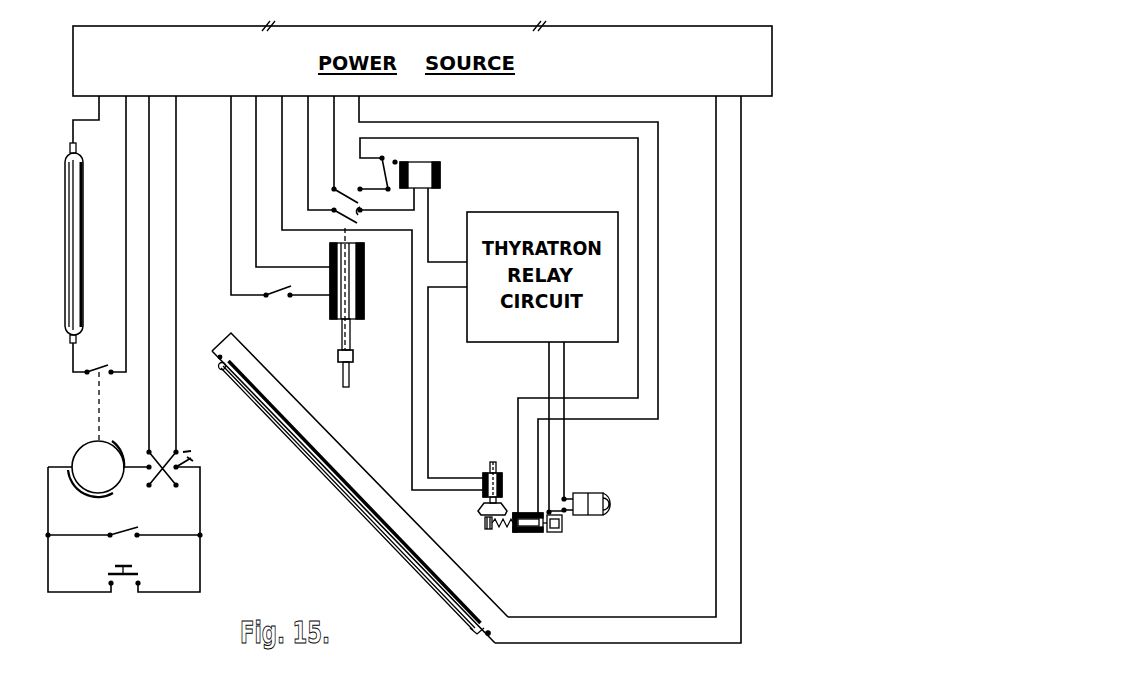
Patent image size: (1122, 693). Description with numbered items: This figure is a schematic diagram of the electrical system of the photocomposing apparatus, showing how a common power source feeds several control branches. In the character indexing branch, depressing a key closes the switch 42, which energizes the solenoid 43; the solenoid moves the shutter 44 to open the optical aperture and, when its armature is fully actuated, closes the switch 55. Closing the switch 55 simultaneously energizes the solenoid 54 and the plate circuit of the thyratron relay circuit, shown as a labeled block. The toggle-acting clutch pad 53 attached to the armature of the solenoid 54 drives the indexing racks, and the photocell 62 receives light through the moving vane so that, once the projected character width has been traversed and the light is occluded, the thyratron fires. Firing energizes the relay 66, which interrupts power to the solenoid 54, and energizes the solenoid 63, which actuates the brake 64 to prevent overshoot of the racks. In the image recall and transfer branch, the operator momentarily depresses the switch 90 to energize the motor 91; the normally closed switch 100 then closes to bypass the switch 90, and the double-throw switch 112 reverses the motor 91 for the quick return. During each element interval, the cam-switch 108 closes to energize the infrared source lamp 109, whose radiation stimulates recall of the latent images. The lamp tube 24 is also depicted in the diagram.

The infrared source lamp 109 is at (84, 230).
The cam-switch 108 is at (97, 369).
The motor 91 is at (113, 493).
The reversing switch 112 is at (191, 458).
The switch 100 is at (134, 530).
The switch 90 is at (128, 566).
The switch 42 is at (285, 288).
The solenoid 43 is at (365, 254).
The shutter 44 is at (352, 374).
The switch 55 is at (335, 188).
The relay 66 is at (441, 172).
The flash lamp tube 24 is at (262, 412).
The solenoid 63 is at (499, 466).
The brake 64 is at (478, 503).
The solenoid 54 is at (527, 534).
The toggle-acting clutch pad 53 is at (563, 532).
The photocell 62 is at (614, 498).